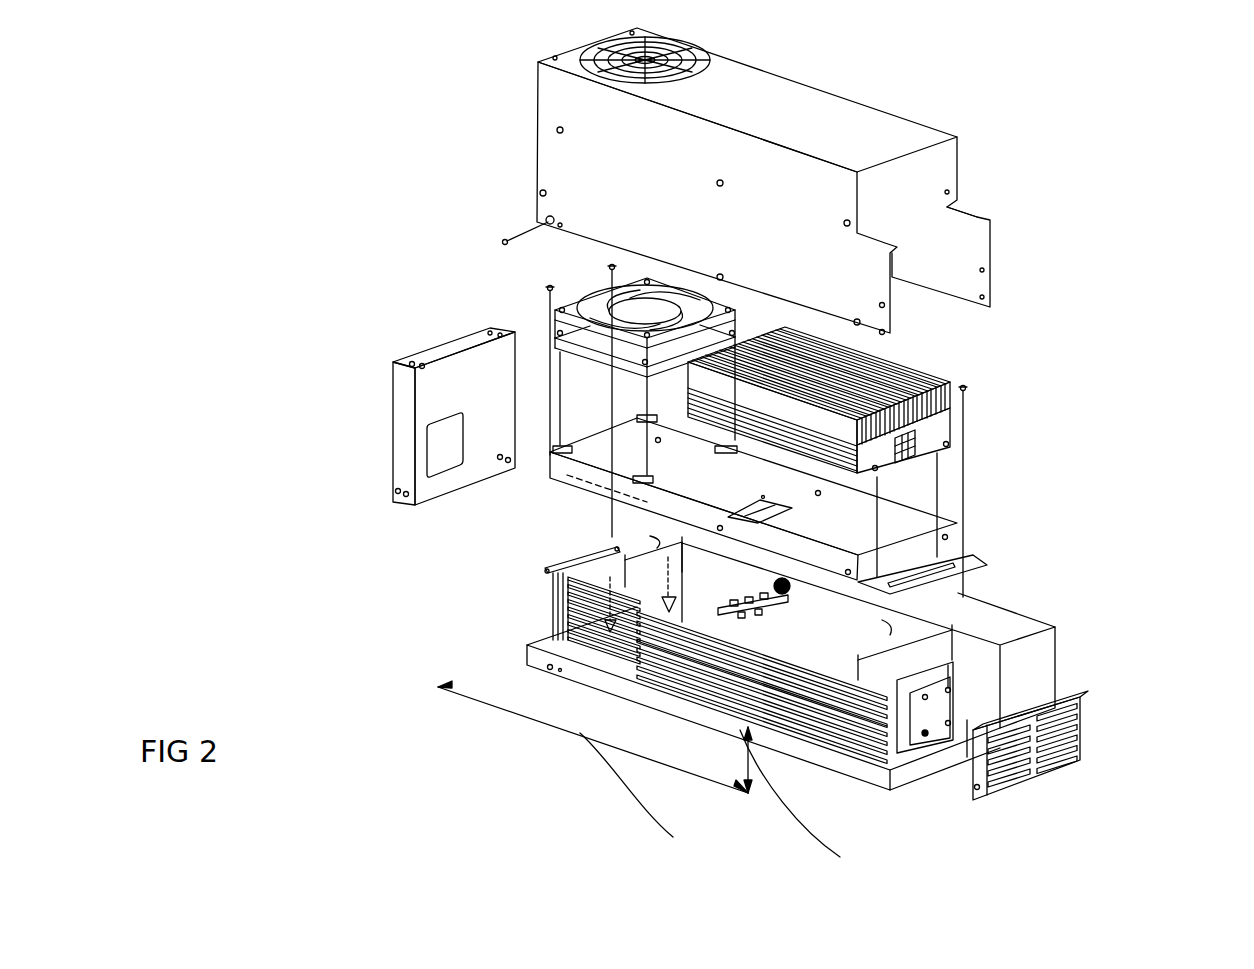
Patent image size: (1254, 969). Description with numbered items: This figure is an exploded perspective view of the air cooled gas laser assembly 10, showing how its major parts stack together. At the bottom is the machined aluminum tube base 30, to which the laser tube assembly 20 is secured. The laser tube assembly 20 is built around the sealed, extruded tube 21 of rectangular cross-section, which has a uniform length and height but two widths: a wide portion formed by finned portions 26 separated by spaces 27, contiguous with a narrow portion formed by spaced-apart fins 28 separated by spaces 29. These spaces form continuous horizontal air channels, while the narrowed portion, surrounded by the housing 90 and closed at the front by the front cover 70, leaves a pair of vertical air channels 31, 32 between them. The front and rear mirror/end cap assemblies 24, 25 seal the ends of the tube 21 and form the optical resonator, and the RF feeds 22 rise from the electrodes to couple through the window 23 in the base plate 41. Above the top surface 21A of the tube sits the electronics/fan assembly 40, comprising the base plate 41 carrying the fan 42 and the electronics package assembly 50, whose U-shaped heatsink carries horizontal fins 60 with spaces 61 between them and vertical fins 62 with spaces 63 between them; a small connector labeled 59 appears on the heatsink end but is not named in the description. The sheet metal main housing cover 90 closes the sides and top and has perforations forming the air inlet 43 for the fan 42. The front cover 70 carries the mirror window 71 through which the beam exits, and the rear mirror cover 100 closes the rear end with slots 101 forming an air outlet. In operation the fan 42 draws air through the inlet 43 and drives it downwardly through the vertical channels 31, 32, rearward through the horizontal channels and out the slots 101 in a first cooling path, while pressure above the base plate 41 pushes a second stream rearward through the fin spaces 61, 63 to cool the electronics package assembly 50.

The gas laser assembly 10 is at (1090, 224).
The laser tube assembly 20 is at (681, 693).
The sealed tube 21 is at (685, 608).
The top surface 21A is at (782, 643).
The RF feeds 22 is at (772, 622).
The window 23 is at (753, 507).
The front mirror/end cap assembly 24 is at (560, 566).
The rear mirror/end cap assembly 25 is at (950, 660).
The finned portions 26 is at (820, 747).
The spaces 27 is at (833, 748).
The fins 28 is at (617, 637).
The spaces 29 is at (585, 632).
The tube base 30 is at (553, 645).
The vertical air channel 31 is at (614, 552).
The vertical air channel 32 is at (668, 560).
The electronics/fan assembly 40 is at (1020, 497).
The base plate 41 is at (543, 467).
The fan 42 is at (577, 312).
The air inlet 43 is at (612, 42).
The electronics package assembly 50 is at (965, 414).
The connector 59 is at (913, 455).
The horizontal fins 60 is at (947, 439).
The spaces 61 is at (947, 428).
The vertical fins 62 is at (913, 380).
The spaces 63 is at (938, 382).
The front cover 70 is at (447, 350).
The mirror window 71 is at (450, 437).
The main housing cover 90 is at (797, 103).
The rear mirror cover 100 is at (1077, 700).
The slots 101 is at (1063, 767).